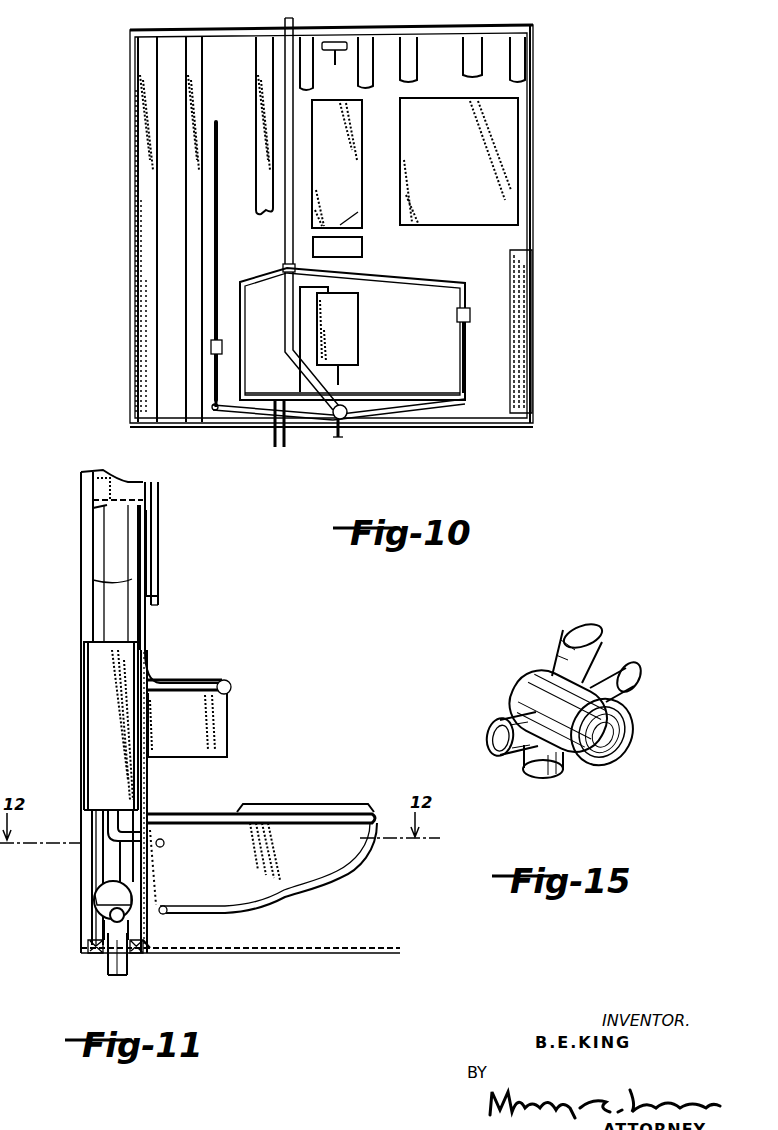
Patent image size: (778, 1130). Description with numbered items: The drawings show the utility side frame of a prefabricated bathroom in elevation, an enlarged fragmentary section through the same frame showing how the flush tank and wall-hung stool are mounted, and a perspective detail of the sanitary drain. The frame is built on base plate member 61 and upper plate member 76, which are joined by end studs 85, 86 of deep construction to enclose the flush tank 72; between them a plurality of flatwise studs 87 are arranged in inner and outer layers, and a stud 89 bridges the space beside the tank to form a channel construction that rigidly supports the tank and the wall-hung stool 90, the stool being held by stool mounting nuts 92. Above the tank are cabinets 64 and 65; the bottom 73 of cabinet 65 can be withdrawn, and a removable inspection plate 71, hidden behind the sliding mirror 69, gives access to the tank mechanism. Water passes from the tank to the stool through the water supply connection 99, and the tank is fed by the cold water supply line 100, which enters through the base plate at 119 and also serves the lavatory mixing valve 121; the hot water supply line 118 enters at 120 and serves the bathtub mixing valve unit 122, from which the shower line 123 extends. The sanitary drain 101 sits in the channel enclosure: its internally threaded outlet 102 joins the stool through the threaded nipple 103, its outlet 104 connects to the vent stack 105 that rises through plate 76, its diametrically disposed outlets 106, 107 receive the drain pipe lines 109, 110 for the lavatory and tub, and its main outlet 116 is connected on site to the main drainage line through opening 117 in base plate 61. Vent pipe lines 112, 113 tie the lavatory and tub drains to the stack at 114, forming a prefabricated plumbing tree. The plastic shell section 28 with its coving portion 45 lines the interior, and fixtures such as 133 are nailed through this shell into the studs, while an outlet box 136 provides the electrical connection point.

In FIG. 10, the upper plate member 76 is at (207, 31).
In FIG. 10, the end stud 85 is at (131, 165).
In FIG. 10, the end stud 86 is at (533, 165).
In FIG. 10, the stud 87 is at (186, 88).
In FIG. 11, the stud 87 is at (93, 580).
In FIG. 10, the outlet box 136 is at (335, 64).
In FIG. 10, the cabinet 65 is at (337, 164).
In FIG. 11, the cabinet 65 is at (125, 480).
In FIG. 10, the cabinet 64 is at (459, 161).
In FIG. 10, the bottom of cabinet 73 is at (355, 222).
In FIG. 11, the bottom of cabinet 73 is at (93, 510).
In FIG. 10, the removable inspection plate 71 is at (362, 250).
In FIG. 11, the removable inspection plate 71 is at (146, 560).
In FIG. 10, the shower line 123 is at (218, 245).
In FIG. 10, the bathtub mixing valve unit 122 is at (222, 347).
In FIG. 10, the vent connection 114 is at (286, 268).
In FIG. 10, the cold water supply line 100 is at (293, 318).
In FIG. 10, the vent stack 105 is at (285, 296).
In FIG. 11, the vent stack 105 is at (108, 856).
In FIG. 10, the vent pipe line 112 is at (397, 280).
In FIG. 10, the flush tank 72 is at (337, 339).
In FIG. 11, the flush tank 72 is at (90, 661).
In FIG. 10, the lavatory mixing valve 121 is at (457, 314).
In FIG. 10, the vent pipe line 113 is at (242, 372).
In FIG. 10, the hot water supply line 118 is at (413, 393).
In FIG. 10, the drain pipe line 110 is at (228, 414).
In FIG. 10, the entry opening for cold water line 119 is at (274, 438).
In FIG. 10, the entry opening for hot water line 120 is at (288, 430).
In FIG. 10, the drain pipe line 109 is at (433, 408).
In FIG. 11, the sliding mirror 69 is at (158, 533).
In FIG. 11, the stud 89 is at (104, 554).
In FIG. 11, the fixture 133 is at (228, 743).
In FIG. 11, the main wall and flooring section 28 is at (148, 784).
In FIG. 11, the water supply connection 99 is at (93, 826).
In FIG. 11, the stool mounting nut 92 is at (165, 845).
In FIG. 11, the threaded nipple 103 is at (160, 884).
In FIG. 11, the sanitary drain 101 is at (96, 891).
In FIG. 15, the sanitary drain 101 is at (505, 680).
In FIG. 11, the drain outlet 106 is at (110, 916).
In FIG. 15, the drain outlet 106 is at (488, 746).
In FIG. 11, the main outlet 116 is at (104, 930).
In FIG. 15, the main outlet 116 is at (540, 777).
In FIG. 11, the base plate member 61 is at (90, 946).
In FIG. 11, the coving portion 45 is at (148, 948).
In FIG. 11, the opening 117 is at (128, 956).
In FIG. 11, the wall-hung stool 90 is at (320, 876).
In FIG. 15, the drain outlet 104 is at (565, 642).
In FIG. 15, the drain outlet 107 is at (632, 682).
In FIG. 15, the internally threaded outlet 102 is at (618, 752).